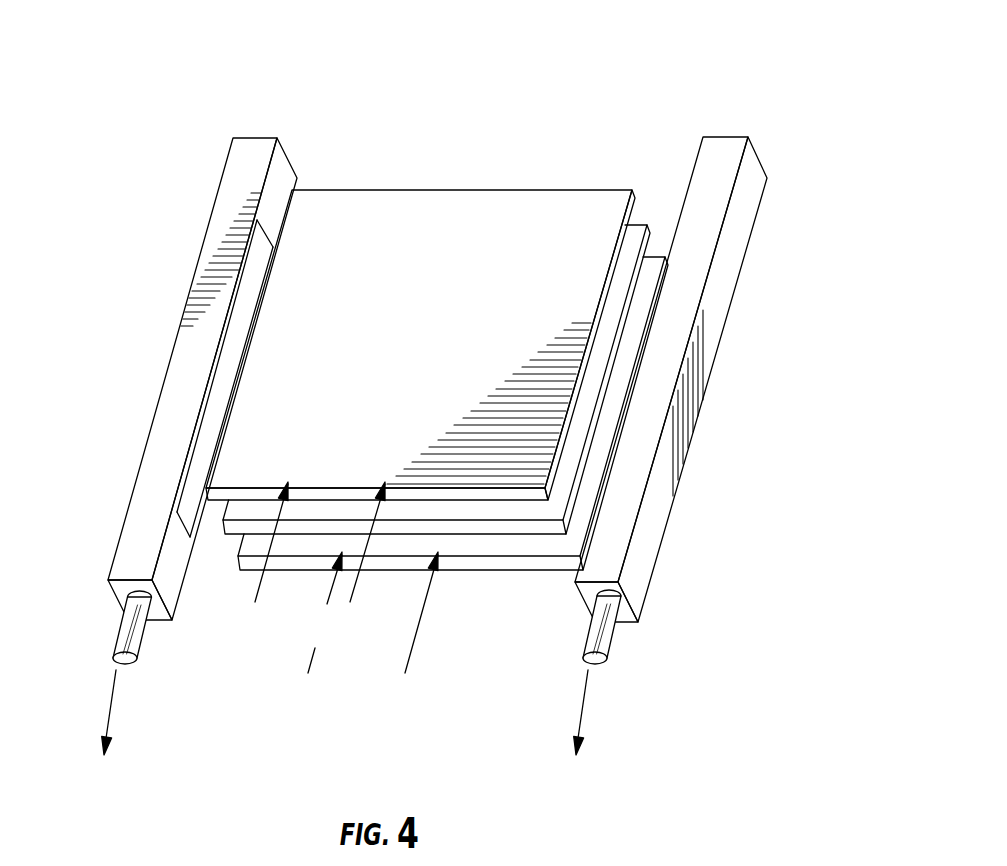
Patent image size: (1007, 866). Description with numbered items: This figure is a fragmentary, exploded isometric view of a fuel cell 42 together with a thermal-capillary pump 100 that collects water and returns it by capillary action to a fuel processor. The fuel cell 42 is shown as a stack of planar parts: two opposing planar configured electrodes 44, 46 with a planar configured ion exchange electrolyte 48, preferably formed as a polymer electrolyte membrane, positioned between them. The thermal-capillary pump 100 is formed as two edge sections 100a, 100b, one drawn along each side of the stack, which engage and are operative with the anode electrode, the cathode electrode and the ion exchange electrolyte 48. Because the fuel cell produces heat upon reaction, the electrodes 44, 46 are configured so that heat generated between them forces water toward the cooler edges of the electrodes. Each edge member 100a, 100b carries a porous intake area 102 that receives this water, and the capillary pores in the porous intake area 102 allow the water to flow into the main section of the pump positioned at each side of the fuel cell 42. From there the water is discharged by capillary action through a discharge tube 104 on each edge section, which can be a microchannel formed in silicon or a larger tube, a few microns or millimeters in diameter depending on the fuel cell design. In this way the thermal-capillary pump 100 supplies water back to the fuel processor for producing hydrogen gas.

The thermal-capillary pump 100 is at (449, 399).
The edge section 100a is at (163, 360).
The edge section 100b is at (748, 205).
The porous intake area 102 is at (232, 383).
The discharge tube 104 is at (118, 623).
The fuel cell 42 is at (474, 298).
The electrode 44 is at (642, 308).
The electrode 46 is at (412, 205).
The ion exchange electrolyte 48 is at (638, 232).